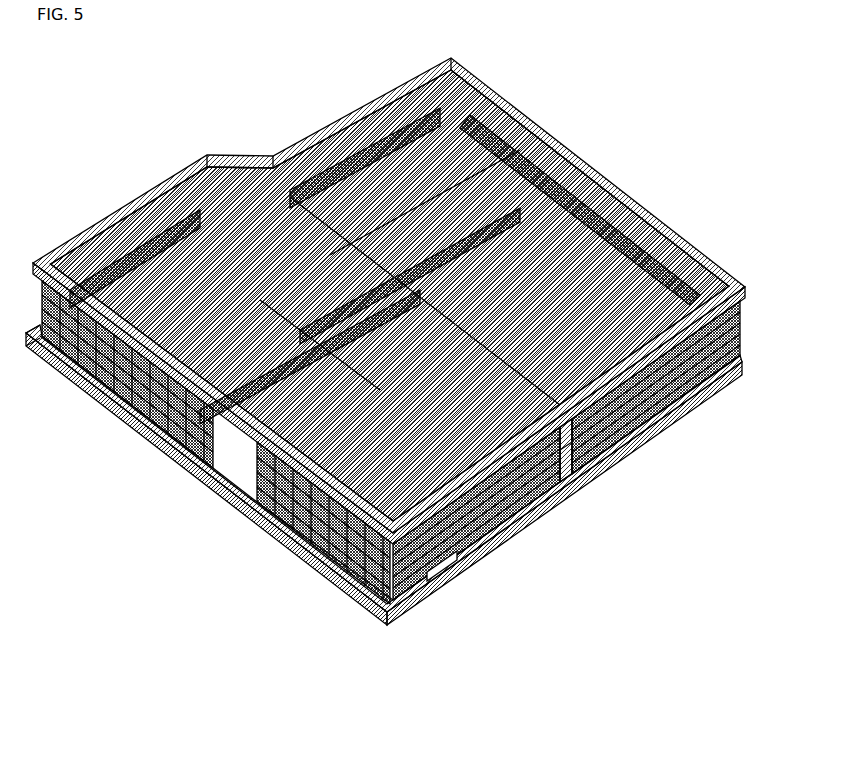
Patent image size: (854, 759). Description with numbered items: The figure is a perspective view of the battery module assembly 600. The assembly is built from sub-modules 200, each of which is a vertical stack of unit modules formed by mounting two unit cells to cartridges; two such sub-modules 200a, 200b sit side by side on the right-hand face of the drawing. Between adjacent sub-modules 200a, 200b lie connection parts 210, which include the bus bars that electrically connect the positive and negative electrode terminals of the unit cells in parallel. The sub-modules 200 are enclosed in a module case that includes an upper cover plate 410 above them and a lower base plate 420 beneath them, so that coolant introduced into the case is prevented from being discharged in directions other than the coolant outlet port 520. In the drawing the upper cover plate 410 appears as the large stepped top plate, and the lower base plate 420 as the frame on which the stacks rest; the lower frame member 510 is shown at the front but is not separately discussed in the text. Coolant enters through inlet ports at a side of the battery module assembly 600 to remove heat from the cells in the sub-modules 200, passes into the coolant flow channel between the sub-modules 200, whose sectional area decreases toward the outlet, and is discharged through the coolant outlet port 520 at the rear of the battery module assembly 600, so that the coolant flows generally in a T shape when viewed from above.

The battery module assembly 600 is at (100, 101).
The upper cover plate 410 is at (44, 252).
The lower base plate 420 is at (42, 352).
The bottom plate 510 is at (216, 470).
The coolant outlet port 520 is at (624, 184).
The sub module 200 is at (576, 450).
The first battery cell 200a is at (540, 512).
The second battery cell 200b is at (652, 402).
The connection part 210 is at (562, 428).